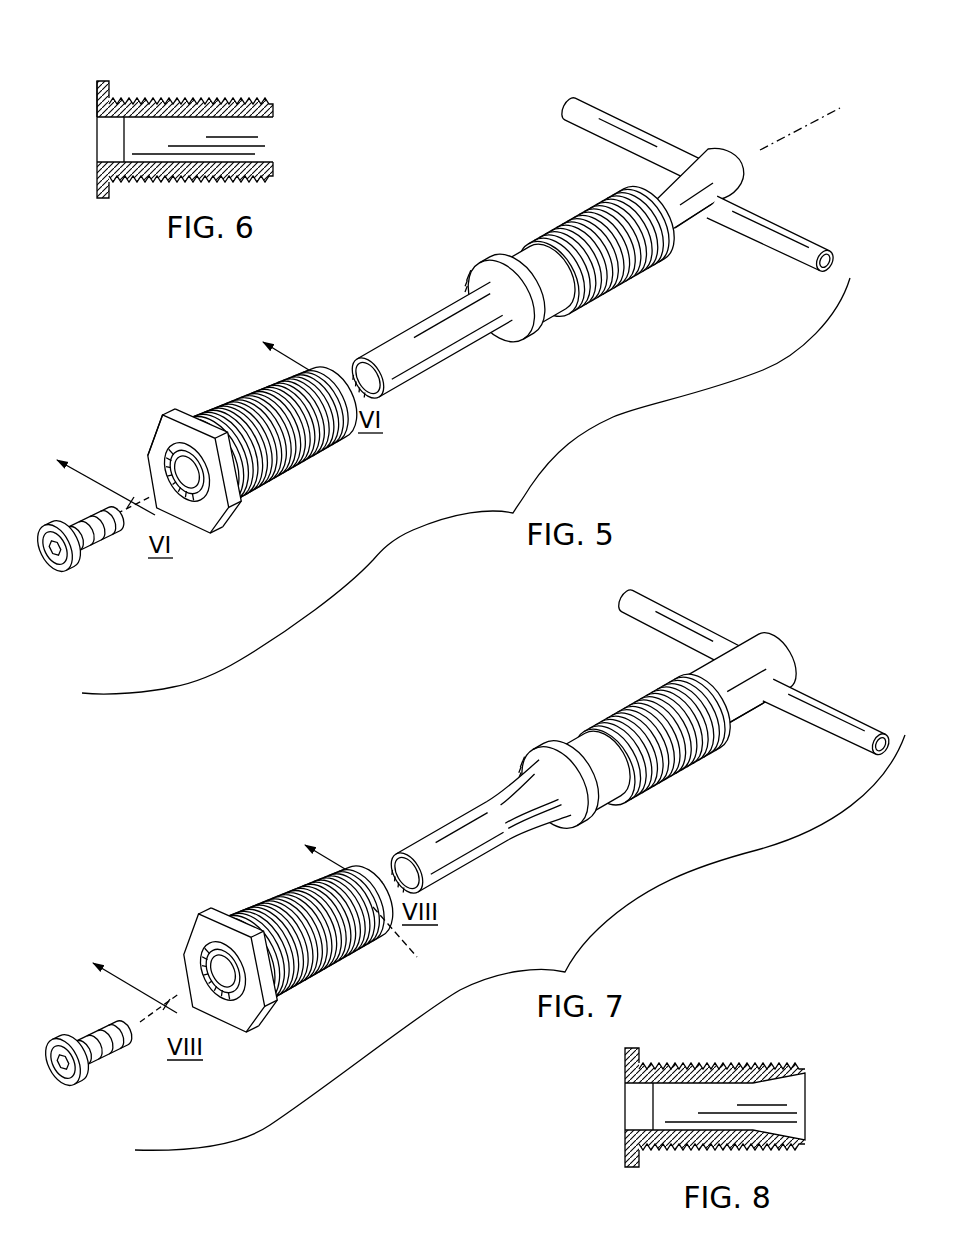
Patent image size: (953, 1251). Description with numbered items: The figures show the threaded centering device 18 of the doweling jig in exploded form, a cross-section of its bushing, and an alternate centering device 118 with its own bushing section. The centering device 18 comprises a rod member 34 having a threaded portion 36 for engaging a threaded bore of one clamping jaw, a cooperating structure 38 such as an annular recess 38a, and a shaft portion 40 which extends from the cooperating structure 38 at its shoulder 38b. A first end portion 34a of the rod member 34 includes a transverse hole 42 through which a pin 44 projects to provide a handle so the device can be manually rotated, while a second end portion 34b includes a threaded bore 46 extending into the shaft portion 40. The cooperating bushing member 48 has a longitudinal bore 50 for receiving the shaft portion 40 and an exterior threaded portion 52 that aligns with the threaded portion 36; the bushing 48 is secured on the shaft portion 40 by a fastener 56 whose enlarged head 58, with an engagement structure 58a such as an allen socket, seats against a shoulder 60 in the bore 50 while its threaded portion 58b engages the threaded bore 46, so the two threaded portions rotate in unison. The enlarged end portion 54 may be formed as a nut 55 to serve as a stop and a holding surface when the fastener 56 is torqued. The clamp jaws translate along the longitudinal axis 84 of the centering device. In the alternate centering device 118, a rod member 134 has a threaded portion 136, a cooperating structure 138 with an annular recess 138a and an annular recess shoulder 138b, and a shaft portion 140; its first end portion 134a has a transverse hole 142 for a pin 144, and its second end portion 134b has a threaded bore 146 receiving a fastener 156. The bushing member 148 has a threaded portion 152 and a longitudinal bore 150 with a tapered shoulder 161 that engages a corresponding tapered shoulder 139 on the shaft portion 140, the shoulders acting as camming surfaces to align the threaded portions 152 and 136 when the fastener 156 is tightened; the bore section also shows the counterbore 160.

In FIG. 5, the threaded centering device 18 is at (508, 135).
In FIG. 5, the rod member 34 is at (710, 158).
In FIG. 5, the first end portion 34a is at (700, 233).
In FIG. 5, the second end portion 34b is at (405, 383).
In FIG. 5, the threaded portion 36 is at (622, 285).
In FIG. 5, the cooperating structure 38 is at (505, 280).
In FIG. 5, the annular recess 38a is at (513, 243).
In FIG. 5, the shoulder 38b is at (480, 272).
In FIG. 5, the shaft portion 40 is at (452, 357).
In FIG. 5, the transverse hole 42 is at (747, 197).
In FIG. 5, the pin 44 is at (797, 227).
In FIG. 5, the threaded bore 46 is at (355, 360).
In FIG. 6, the bushing member 48 is at (197, 131).
In FIG. 5, the bushing member 48 is at (239, 463).
In FIG. 6, the longitudinal bore 50 is at (263, 128).
In FIG. 5, the longitudinal bore 50 is at (187, 472).
In FIG. 6, the threaded portion 52 is at (190, 97).
In FIG. 5, the threaded portion 52 is at (276, 429).
In FIG. 6, the enlarged end portion 54 is at (103, 78).
In FIG. 5, the enlarged end portion 54 is at (192, 471).
In FIG. 6, the nut 55 is at (100, 100).
In FIG. 5, the nut 55 is at (155, 435).
In FIG. 5, the fastener 56 is at (97, 558).
In FIG. 5, the enlarged head 58 is at (59, 546).
In FIG. 5, the engagement structure 58a is at (50, 560).
In FIG. 5, the threaded portion 58b is at (92, 530).
In FIG. 6, the shoulder 60 is at (97, 160).
In FIG. 5, the shoulder 60 is at (186, 471).
In FIG. 5, the longitudinal axis 84 is at (826, 112).
In FIG. 7, the centering device 118 is at (522, 658).
In FIG. 7, the rod member 134 is at (740, 723).
In FIG. 7, the first end portion 134a is at (773, 707).
In FIG. 7, the second end portion 134b is at (455, 820).
In FIG. 7, the threaded portion 136 is at (653, 780).
In FIG. 7, the cooperating structure 138 is at (545, 773).
In FIG. 7, the annular recess 138a is at (557, 737).
In FIG. 7, the annular recess shoulder 138b is at (543, 747).
In FIG. 7, the shoulder 139 is at (537, 833).
In FIG. 7, the shaft portion 140 is at (457, 867).
In FIG. 7, the transverse hole 142 is at (800, 677).
In FIG. 7, the pin 144 is at (840, 717).
In FIG. 7, the threaded bore 146 is at (395, 855).
In FIG. 7, the bushing member 148 is at (305, 944).
In FIG. 8, the bushing member 148 is at (748, 1081).
In FIG. 8, the longitudinal bore 150 is at (797, 1120).
In FIG. 7, the threaded portion 152 is at (312, 928).
In FIG. 8, the threaded portion 152 is at (693, 1062).
In FIG. 7, the fastener 156 is at (110, 1077).
In FIG. 7, the counterbore 160 is at (222, 970).
In FIG. 7, the shoulder 161 is at (413, 945).
In FIG. 8, the shoulder 161 is at (782, 1080).